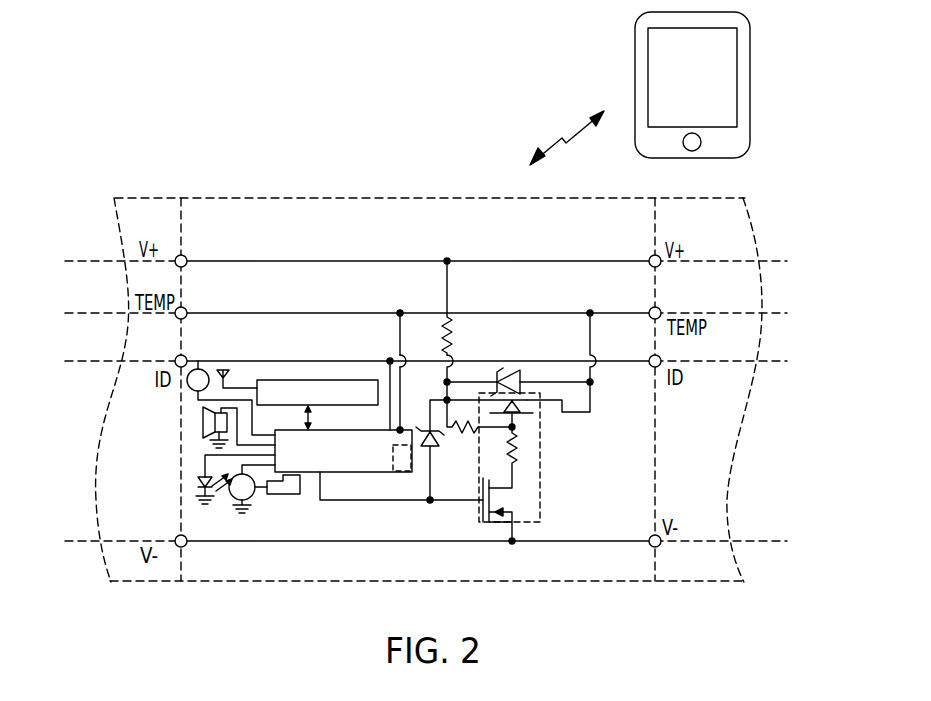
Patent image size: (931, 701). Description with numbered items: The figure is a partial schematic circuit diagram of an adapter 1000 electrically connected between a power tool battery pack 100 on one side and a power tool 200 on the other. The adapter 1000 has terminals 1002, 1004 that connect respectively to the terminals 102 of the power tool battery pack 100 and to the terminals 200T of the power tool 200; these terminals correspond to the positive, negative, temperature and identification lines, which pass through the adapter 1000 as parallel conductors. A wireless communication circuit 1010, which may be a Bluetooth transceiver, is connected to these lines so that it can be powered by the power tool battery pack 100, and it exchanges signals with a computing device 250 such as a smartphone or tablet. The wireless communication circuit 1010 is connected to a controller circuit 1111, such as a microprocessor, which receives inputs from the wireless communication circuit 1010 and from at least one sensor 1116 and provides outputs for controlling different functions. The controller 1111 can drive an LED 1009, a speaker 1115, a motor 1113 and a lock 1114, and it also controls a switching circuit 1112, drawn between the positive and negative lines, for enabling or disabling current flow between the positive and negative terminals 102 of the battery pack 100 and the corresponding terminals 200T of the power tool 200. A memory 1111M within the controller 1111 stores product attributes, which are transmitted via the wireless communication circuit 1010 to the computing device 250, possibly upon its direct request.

The power tool battery pack 100 is at (133, 208).
The adapter 1000 is at (348, 197).
The power tool 200 is at (728, 241).
The computing device 250 is at (717, 72).
The terminals of power tool battery pack 102 is at (179, 308).
The adapter terminals 1004 is at (187, 258).
The adapter terminals 1002 is at (649, 311).
The terminals of power tool 200T is at (661, 311).
The wireless communication circuit 1010 is at (303, 378).
The sensor 1116 is at (191, 387).
The speaker 1115 is at (203, 421).
The LED 1009 is at (203, 475).
The motor 1113 is at (253, 497).
The lock 1114 is at (290, 495).
The controller circuit 1111 is at (367, 473).
The memory 1111M is at (405, 472).
The switching circuit 1112 is at (541, 438).